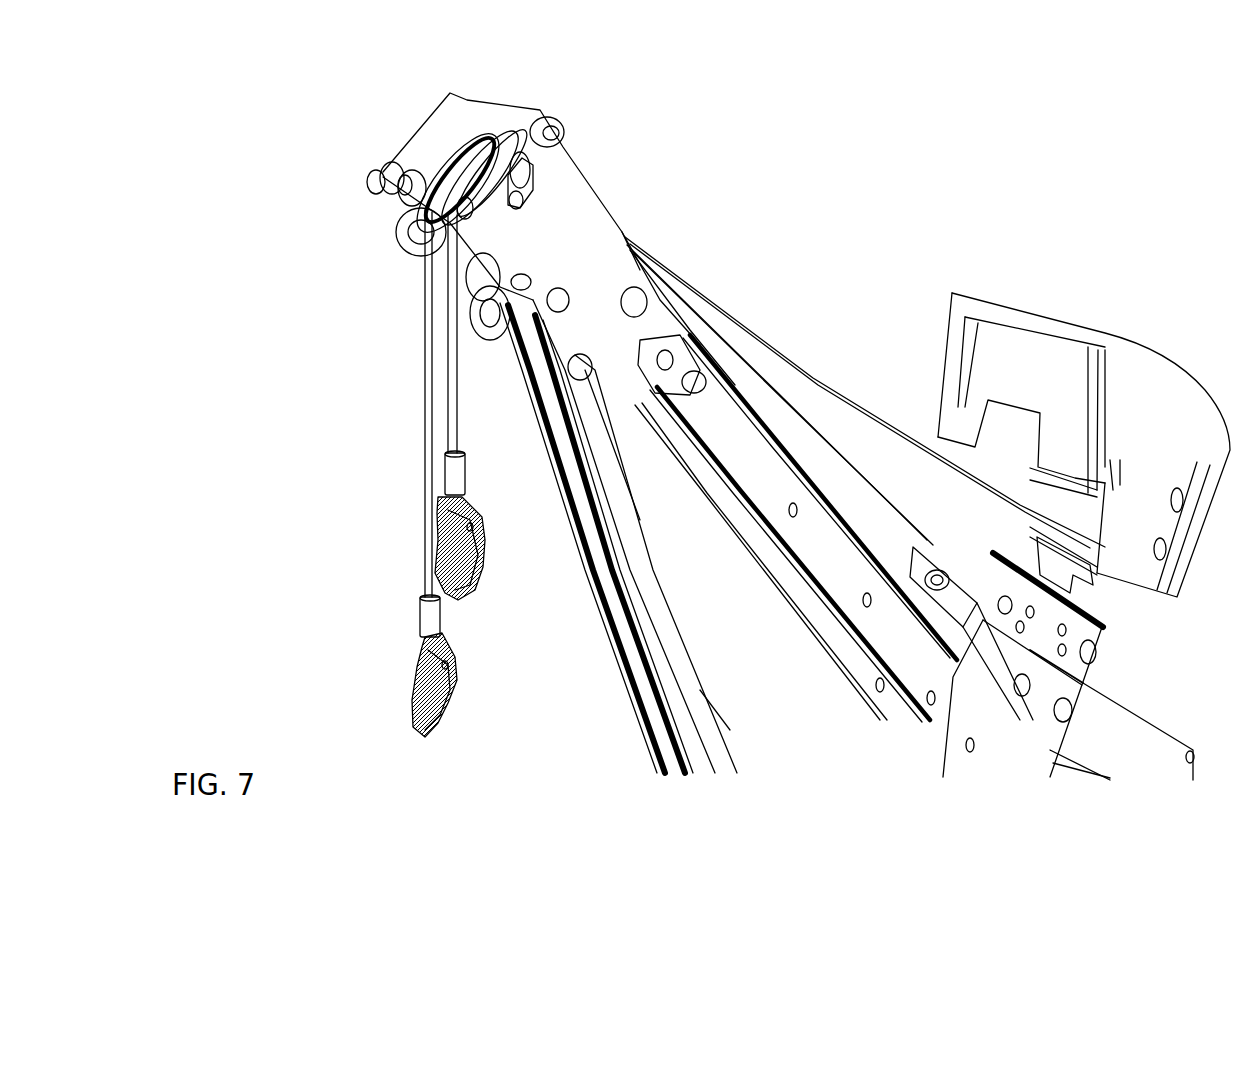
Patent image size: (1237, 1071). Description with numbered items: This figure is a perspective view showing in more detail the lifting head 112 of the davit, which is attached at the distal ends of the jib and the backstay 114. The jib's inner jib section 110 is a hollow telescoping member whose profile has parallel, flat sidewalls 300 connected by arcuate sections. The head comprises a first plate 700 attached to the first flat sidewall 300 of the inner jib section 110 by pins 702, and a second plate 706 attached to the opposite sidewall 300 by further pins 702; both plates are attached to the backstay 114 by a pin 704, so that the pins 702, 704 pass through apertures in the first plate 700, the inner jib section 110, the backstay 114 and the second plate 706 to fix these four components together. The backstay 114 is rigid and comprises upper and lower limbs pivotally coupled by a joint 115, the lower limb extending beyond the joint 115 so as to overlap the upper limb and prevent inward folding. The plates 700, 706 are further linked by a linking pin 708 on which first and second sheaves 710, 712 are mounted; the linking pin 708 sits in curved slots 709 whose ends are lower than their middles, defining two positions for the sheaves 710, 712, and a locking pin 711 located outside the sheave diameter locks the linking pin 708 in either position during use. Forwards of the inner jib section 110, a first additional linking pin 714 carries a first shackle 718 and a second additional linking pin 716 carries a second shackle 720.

The inner jib section 110 is at (615, 557).
The lifting head 112 is at (335, 182).
The backstay 114 is at (775, 500).
The joint 115 is at (690, 360).
The flat sidewall 300 is at (602, 443).
The first plate 700 is at (585, 235).
The pins 702 is at (567, 292).
The pin 704 is at (648, 305).
The second plate 706 is at (385, 175).
The linking pin 708 is at (518, 198).
The slots 709 is at (532, 172).
The first sheave 710 is at (467, 120).
The locking pin 711 is at (565, 127).
The second sheave 712 is at (498, 130).
The first additional linking pin 714 is at (418, 192).
The second additional linking pin 716 is at (478, 275).
The first shackle 718 is at (412, 242).
The second shackle 720 is at (480, 327).